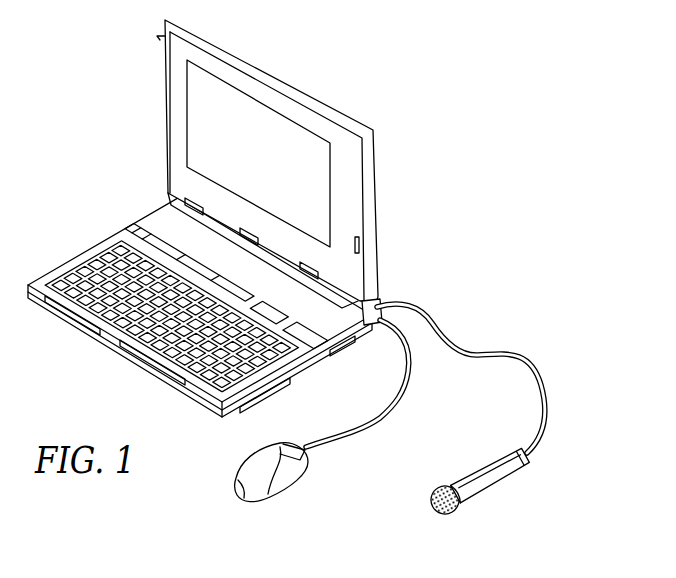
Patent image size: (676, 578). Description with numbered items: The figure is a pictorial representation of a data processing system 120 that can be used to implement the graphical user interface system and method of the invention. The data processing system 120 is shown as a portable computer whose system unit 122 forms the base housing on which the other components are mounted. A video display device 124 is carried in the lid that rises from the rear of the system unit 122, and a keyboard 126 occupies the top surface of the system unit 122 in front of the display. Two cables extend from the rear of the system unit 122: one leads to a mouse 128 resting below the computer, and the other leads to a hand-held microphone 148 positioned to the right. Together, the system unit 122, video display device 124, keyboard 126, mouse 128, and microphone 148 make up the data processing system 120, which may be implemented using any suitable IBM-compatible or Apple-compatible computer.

The data processing system 120 is at (329, 78).
The system unit 122 is at (146, 213).
The video display device 124 is at (197, 88).
The keyboard 126 is at (76, 256).
The mouse 128 is at (284, 474).
The microphone 148 is at (497, 487).